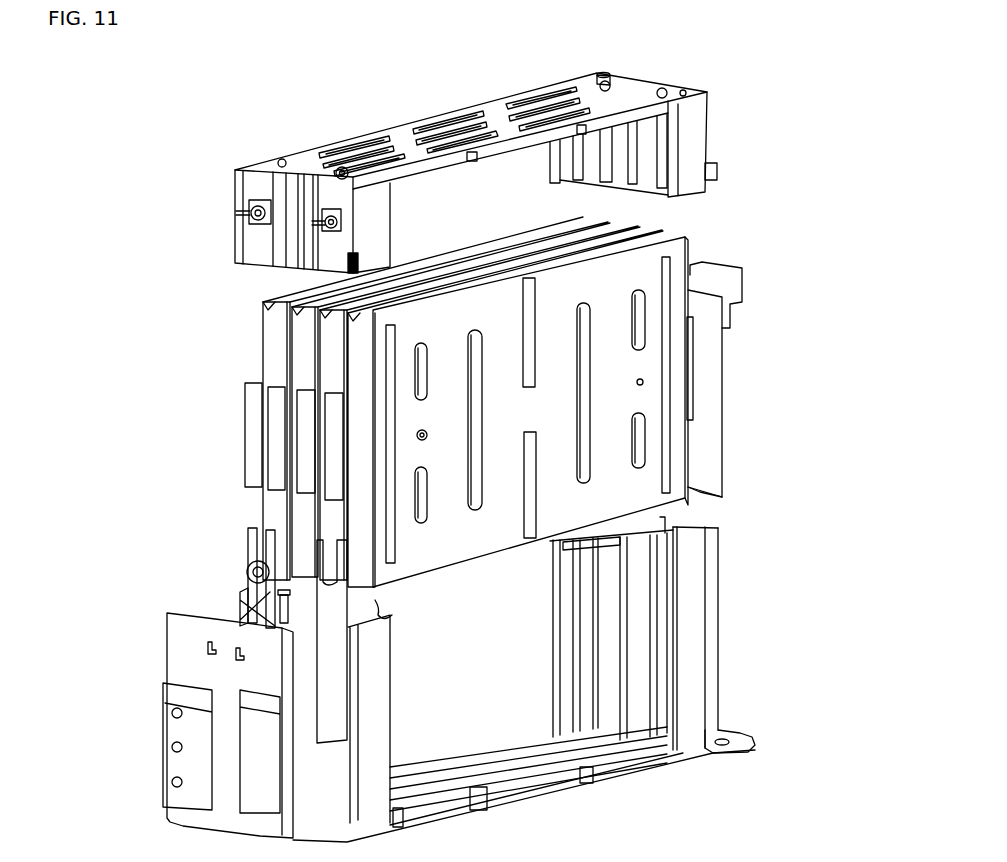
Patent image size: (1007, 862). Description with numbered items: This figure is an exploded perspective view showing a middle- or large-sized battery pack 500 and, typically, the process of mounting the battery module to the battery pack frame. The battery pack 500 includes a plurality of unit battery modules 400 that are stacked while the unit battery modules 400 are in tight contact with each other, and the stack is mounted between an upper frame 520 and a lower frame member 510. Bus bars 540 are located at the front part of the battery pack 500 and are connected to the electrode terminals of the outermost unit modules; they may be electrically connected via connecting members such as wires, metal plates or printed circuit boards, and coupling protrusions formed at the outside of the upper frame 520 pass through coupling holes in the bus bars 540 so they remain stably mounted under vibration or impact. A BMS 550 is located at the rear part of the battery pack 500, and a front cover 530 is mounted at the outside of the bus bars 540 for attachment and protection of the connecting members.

The middle- or large-sized battery pack 500 is at (128, 89).
The upper frame 520 is at (246, 211).
The unit battery modules 400 is at (244, 433).
The BMS 550 is at (720, 413).
The bus bars 540 is at (245, 528).
The front cover 530 is at (190, 652).
The lower frame member 510 is at (718, 601).